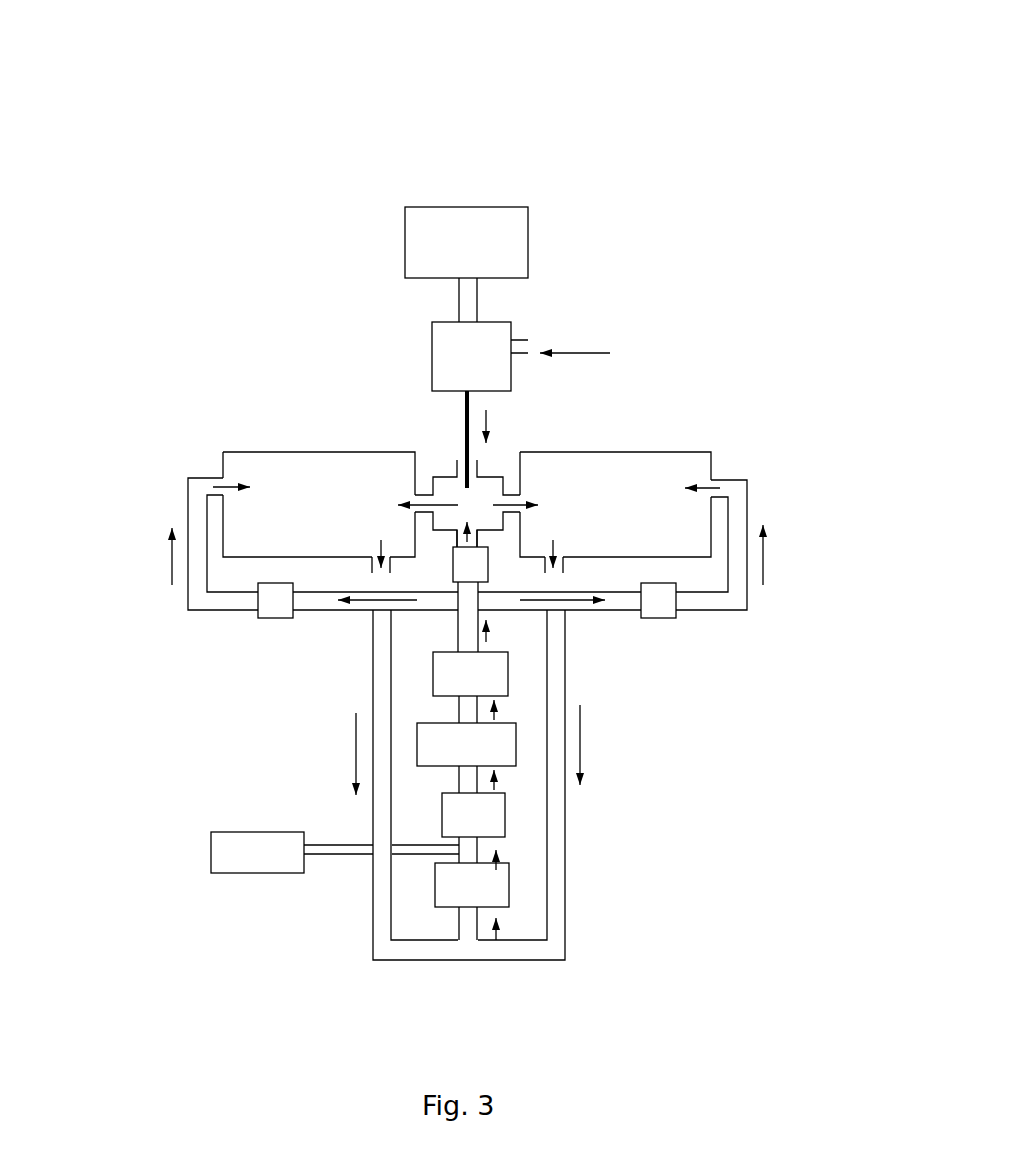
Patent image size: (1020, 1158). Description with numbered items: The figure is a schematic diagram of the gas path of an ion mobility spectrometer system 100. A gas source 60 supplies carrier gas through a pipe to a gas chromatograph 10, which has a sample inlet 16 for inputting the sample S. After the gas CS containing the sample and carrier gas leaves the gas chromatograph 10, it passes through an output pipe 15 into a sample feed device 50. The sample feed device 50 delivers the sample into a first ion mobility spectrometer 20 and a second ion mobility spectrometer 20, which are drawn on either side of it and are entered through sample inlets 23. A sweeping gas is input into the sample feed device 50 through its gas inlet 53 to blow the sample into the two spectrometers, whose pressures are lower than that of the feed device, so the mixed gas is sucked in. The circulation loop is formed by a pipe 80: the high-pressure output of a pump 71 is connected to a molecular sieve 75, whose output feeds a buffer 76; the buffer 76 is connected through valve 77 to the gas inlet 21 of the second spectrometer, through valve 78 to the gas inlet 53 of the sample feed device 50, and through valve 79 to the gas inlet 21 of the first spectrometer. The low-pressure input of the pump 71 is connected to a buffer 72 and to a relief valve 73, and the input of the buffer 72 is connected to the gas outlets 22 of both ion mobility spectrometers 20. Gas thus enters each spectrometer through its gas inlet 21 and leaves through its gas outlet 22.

The ion mobility spectrometer system 100 is at (615, 150).
The gas source 60 is at (466, 242).
The gas chromatograph 10 is at (471, 334).
The sample inlet 16 is at (533, 347).
The output pipe 15 is at (463, 433).
The sample feed device 50 is at (443, 471).
The sample inlet 23 is at (413, 497).
The ion mobility spectrometer 20 is at (483, 455).
The gas inlet 21 is at (219, 483).
The gas outlet 22 is at (378, 572).
The gas inlet 53 is at (475, 541).
The valve 78 is at (462, 576).
The valve 79 is at (272, 604).
The valve 77 is at (664, 608).
The pipe 80 is at (543, 960).
The buffer 76 is at (470, 687).
The molecular sieve 75 is at (466, 758).
The pump 71 is at (473, 831).
The buffer 72 is at (472, 901).
The relief valve 73 is at (335, 852).